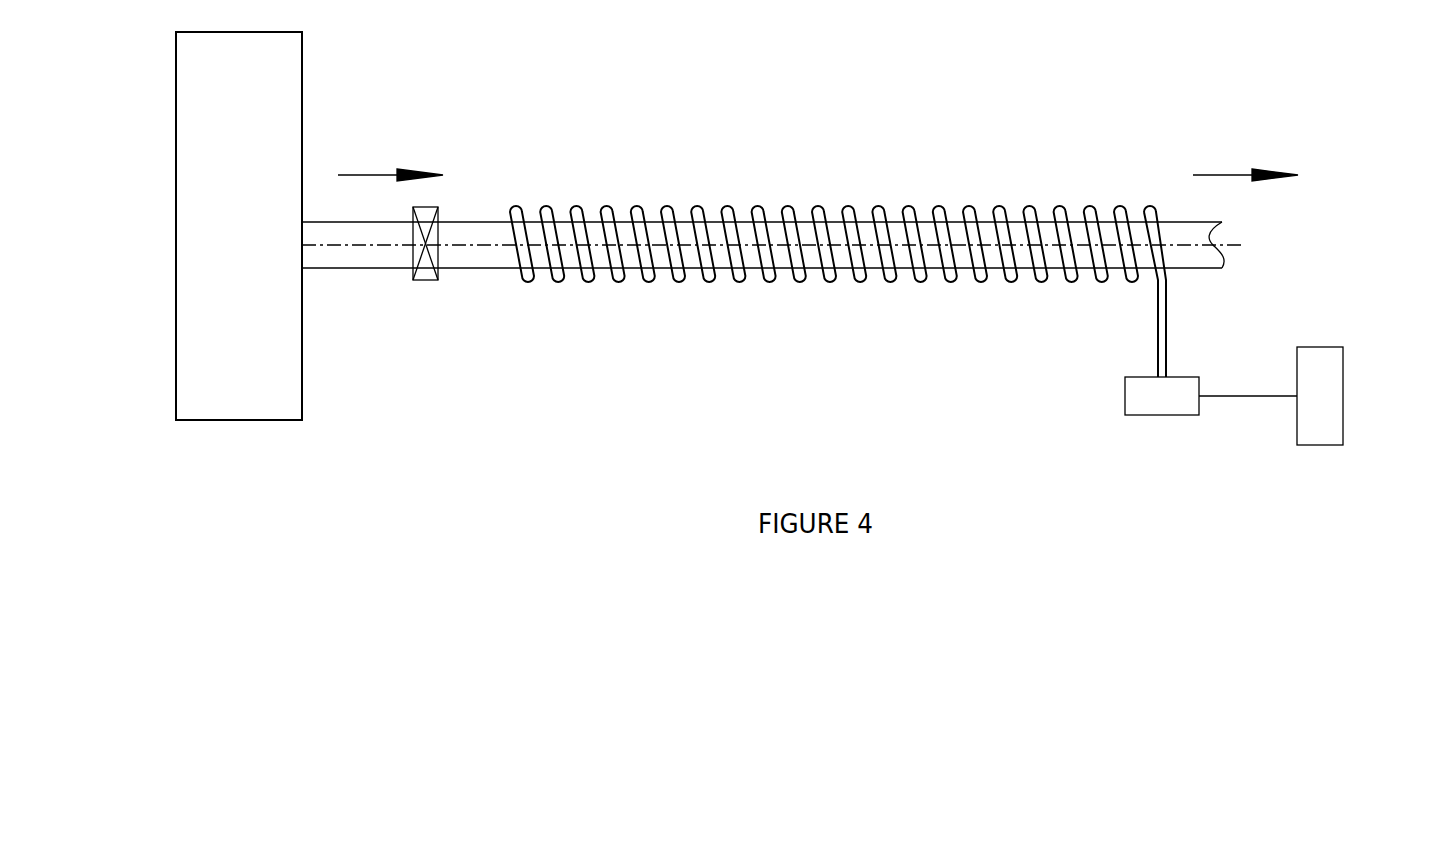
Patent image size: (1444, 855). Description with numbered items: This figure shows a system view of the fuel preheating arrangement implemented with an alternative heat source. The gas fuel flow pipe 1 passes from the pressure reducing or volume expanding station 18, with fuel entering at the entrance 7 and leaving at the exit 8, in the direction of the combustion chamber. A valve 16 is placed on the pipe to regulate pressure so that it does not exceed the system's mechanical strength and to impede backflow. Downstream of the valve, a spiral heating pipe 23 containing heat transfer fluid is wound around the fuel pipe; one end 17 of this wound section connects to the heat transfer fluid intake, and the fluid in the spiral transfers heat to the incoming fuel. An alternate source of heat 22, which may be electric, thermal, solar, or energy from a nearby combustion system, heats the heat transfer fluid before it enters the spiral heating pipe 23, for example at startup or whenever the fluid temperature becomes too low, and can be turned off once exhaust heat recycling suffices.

The gas fuel flow pipe 1 is at (322, 262).
The entrance 7 is at (402, 170).
The exit 8 is at (1253, 172).
The valve 16 is at (438, 208).
The end of wound section of pipe 17 is at (755, 208).
The pressure reducing or volume expanding station 18 is at (184, 163).
The alternate source of heat 22 is at (1343, 395).
The spiral heating pipe 23 is at (1125, 415).